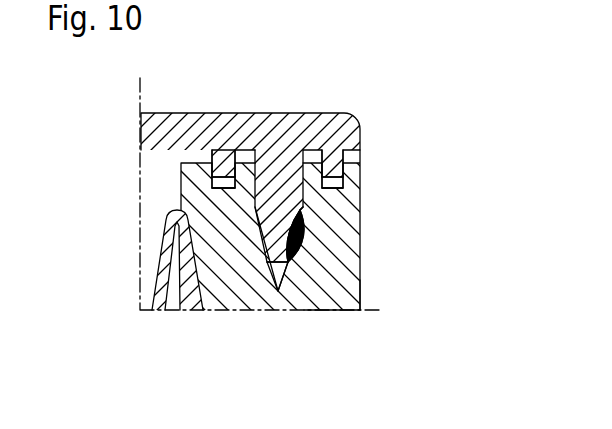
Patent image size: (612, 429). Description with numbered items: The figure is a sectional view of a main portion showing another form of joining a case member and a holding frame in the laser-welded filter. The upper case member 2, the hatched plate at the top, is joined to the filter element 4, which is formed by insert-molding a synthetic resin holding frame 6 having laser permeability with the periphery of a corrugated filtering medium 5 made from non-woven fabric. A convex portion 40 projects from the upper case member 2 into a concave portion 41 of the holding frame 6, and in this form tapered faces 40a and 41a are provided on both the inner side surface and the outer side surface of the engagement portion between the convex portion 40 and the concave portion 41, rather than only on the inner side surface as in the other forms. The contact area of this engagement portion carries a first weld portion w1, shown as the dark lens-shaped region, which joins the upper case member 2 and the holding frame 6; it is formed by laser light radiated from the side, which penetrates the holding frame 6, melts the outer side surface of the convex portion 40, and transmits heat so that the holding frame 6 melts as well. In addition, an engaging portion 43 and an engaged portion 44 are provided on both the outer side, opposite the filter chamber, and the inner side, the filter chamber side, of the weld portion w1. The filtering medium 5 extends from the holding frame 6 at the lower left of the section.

The upper case member 2 is at (171, 113).
The filter element 4 is at (363, 289).
The convex portion 40 is at (275, 220).
The tapered face 40a is at (301, 210).
The concave portion 41 is at (279, 295).
The tapered face 41a is at (267, 262).
The engaging portion 43 is at (222, 169).
The engaged portion 44 is at (232, 185).
The filtering medium 5 is at (158, 266).
The holding frame 6 is at (319, 298).
The first weld portion w1 is at (303, 240).